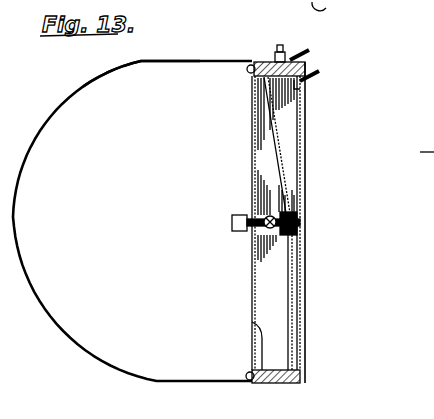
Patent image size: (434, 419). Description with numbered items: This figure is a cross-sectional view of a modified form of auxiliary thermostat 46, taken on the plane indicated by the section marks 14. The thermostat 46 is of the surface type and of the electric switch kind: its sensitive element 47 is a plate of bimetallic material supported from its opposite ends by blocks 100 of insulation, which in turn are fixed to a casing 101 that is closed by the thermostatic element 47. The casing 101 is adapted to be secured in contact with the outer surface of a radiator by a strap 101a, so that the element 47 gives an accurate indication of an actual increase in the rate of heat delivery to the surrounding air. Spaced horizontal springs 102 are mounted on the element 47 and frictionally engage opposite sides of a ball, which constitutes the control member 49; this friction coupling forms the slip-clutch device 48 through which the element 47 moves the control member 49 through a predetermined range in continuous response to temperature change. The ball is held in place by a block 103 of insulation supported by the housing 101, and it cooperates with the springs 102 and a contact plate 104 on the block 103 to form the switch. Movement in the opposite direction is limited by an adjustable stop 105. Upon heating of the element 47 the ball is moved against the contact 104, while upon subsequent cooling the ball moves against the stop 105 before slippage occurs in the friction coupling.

The section line 14- 14 is at (222, 209).
The thermostat 46 is at (313, 110).
The sensitive element 47 is at (298, 144).
The device 48 is at (292, 245).
The control member 49 is at (252, 258).
The blocks of insulation 100 is at (262, 62).
The casing 101 is at (253, 101).
The strap 101a is at (128, 67).
The horizontal springs 102 is at (268, 212).
The block of insulation 103 is at (266, 214).
The contact plate 104 is at (294, 217).
The adjustable stop 105 is at (245, 217).